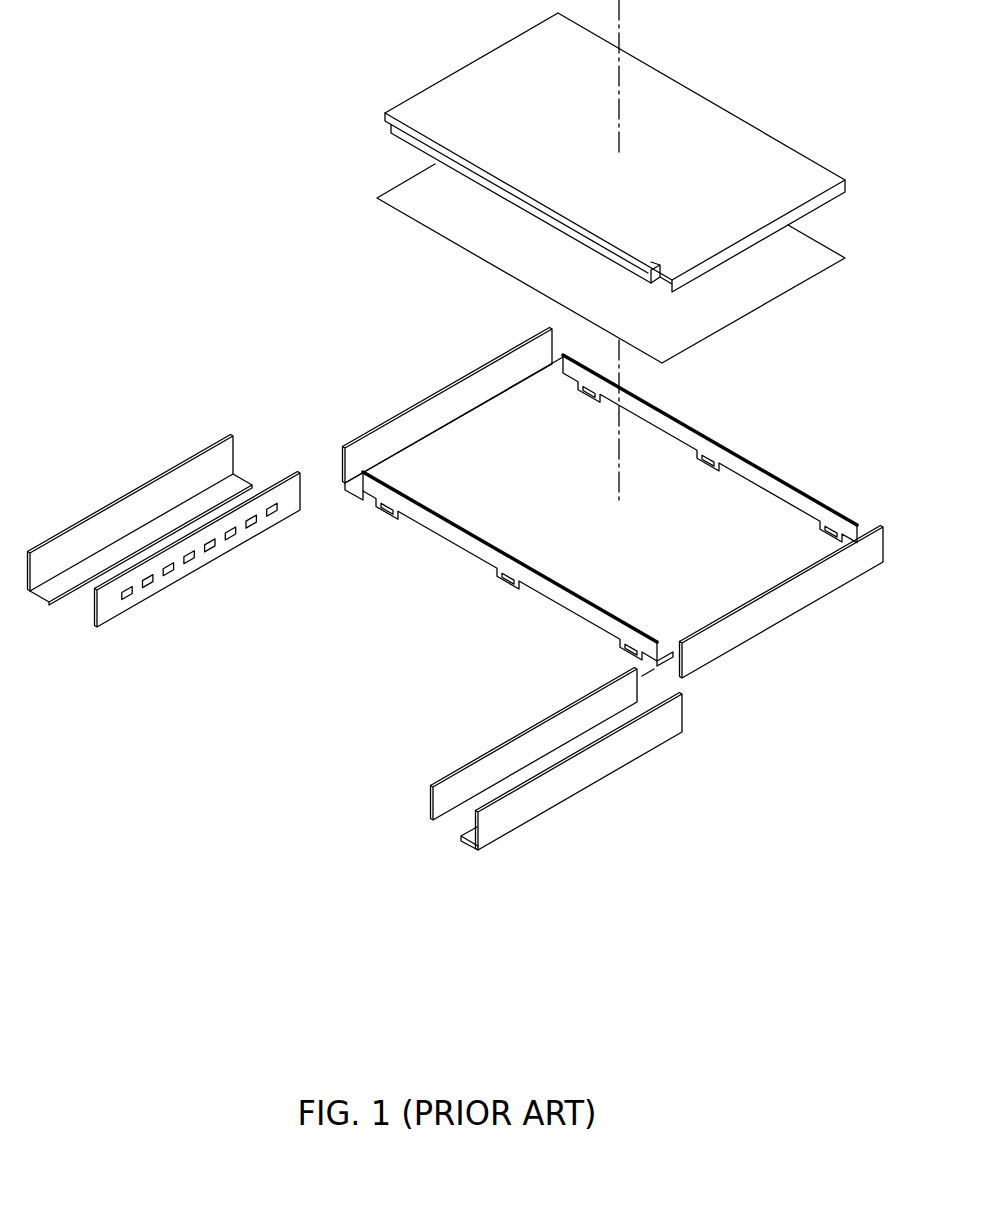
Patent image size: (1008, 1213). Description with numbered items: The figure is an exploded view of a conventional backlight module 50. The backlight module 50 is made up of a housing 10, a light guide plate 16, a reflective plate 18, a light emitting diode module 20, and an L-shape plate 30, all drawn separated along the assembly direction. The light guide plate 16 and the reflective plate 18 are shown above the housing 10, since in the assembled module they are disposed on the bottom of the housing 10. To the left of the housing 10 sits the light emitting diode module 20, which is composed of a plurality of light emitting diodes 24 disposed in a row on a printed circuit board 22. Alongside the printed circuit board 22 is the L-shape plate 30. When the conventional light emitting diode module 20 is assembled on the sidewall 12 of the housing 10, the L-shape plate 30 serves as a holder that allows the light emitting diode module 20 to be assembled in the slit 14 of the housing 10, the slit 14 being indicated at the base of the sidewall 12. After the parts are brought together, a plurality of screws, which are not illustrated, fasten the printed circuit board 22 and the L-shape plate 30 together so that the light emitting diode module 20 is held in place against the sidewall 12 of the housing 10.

The backlight module 50 is at (192, 124).
The housing 10 is at (584, 503).
The sidewall 12 is at (435, 403).
The slit 14 is at (407, 449).
The light guide plate 16 is at (807, 170).
The reflective plate 18 is at (809, 258).
The light emitting diode module 20 is at (198, 598).
The printed circuit board 22 is at (110, 607).
The light emitting diodes 24 is at (152, 583).
The L-shape plate 30 is at (48, 590).